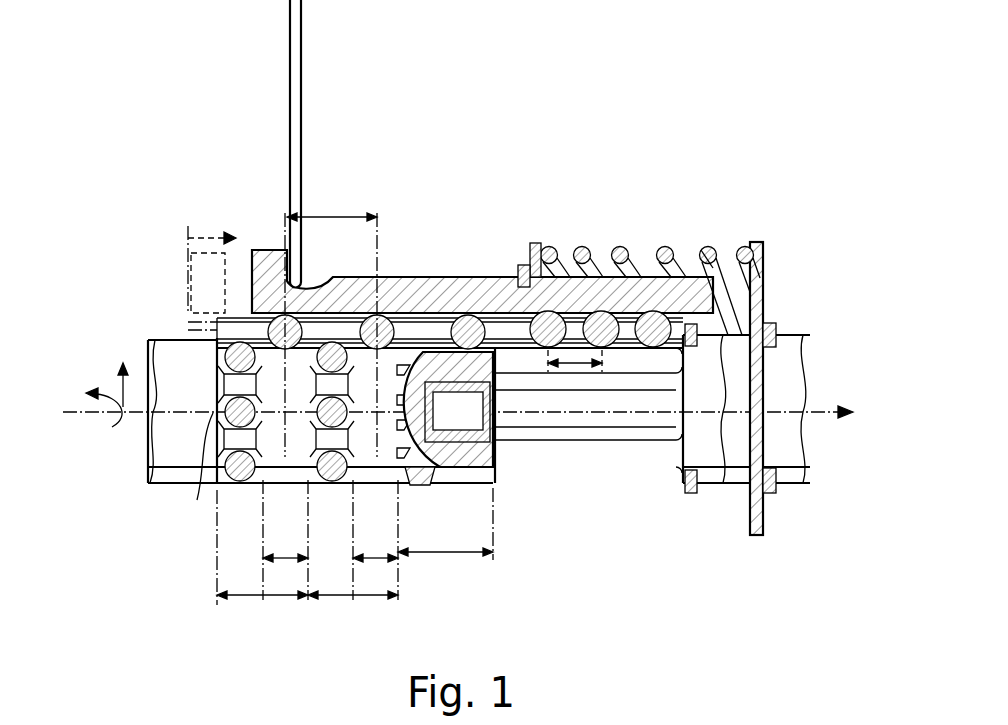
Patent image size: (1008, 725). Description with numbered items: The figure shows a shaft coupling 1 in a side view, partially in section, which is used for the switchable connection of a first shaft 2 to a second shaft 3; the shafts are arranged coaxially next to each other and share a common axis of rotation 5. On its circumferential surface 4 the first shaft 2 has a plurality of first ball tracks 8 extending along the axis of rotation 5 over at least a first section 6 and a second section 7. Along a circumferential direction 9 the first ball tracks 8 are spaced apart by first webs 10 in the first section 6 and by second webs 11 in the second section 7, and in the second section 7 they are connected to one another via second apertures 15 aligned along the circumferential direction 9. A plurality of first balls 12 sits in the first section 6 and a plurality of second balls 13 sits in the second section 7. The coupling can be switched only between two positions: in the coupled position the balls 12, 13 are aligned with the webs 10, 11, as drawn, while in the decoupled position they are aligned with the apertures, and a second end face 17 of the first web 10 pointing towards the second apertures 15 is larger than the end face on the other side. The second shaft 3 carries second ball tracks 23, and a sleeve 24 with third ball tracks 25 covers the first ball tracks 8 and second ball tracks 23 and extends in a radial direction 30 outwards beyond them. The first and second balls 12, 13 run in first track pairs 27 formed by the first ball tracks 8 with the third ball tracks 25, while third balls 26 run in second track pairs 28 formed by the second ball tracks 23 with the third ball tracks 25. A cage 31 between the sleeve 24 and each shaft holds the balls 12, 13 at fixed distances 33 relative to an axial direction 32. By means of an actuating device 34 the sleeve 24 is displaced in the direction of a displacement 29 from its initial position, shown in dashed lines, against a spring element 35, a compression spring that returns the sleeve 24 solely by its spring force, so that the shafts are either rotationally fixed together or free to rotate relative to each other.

The shaft coupling 1 is at (600, 156).
The first shaft 2 is at (146, 486).
The second shaft 3 is at (705, 440).
The circumferential surface 4 is at (287, 465).
The axis of rotation 5 is at (836, 410).
The first section 6 is at (431, 554).
The second section 7 is at (262, 597).
The first ball tracks 8 is at (202, 468).
The circumferential direction 9 is at (101, 418).
The first webs 10 is at (437, 484).
The second webs 11 is at (220, 472).
The first balls 12 is at (420, 315).
The second balls 13 is at (238, 343).
The second apertures 15 is at (290, 560).
The second end face 17 is at (353, 446).
The second ball tracks 23 is at (653, 320).
The sleeve 24 is at (548, 320).
The third ball tracks 25 is at (601, 320).
The third balls 26 is at (563, 268).
The first track pairs 27 is at (347, 326).
The second track pairs 28 is at (604, 352).
The displacement 29 is at (203, 237).
The radial direction 30 is at (108, 379).
The cage 31 is at (764, 262).
The axial direction 32 is at (860, 427).
The fixed distances 33 is at (562, 540).
The actuating device 34 is at (303, 58).
The spring element 35 is at (701, 250).